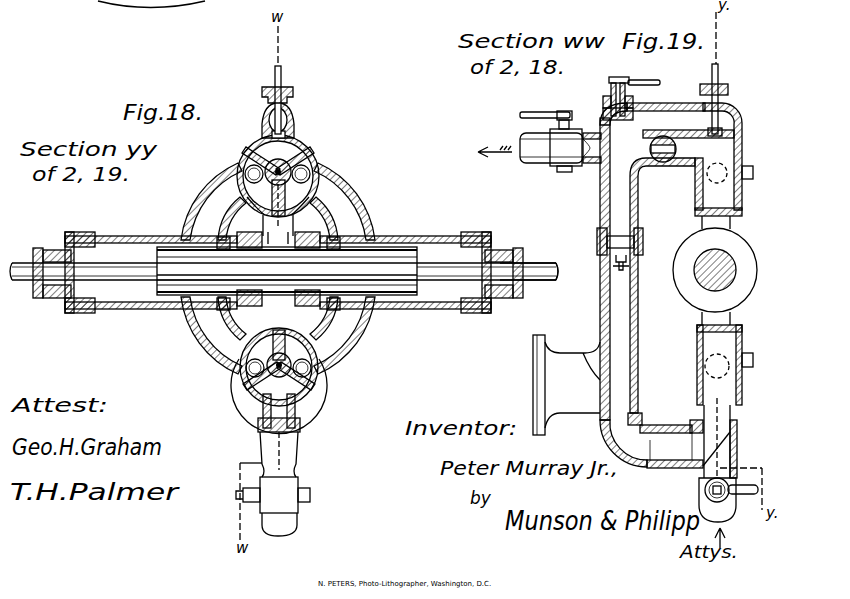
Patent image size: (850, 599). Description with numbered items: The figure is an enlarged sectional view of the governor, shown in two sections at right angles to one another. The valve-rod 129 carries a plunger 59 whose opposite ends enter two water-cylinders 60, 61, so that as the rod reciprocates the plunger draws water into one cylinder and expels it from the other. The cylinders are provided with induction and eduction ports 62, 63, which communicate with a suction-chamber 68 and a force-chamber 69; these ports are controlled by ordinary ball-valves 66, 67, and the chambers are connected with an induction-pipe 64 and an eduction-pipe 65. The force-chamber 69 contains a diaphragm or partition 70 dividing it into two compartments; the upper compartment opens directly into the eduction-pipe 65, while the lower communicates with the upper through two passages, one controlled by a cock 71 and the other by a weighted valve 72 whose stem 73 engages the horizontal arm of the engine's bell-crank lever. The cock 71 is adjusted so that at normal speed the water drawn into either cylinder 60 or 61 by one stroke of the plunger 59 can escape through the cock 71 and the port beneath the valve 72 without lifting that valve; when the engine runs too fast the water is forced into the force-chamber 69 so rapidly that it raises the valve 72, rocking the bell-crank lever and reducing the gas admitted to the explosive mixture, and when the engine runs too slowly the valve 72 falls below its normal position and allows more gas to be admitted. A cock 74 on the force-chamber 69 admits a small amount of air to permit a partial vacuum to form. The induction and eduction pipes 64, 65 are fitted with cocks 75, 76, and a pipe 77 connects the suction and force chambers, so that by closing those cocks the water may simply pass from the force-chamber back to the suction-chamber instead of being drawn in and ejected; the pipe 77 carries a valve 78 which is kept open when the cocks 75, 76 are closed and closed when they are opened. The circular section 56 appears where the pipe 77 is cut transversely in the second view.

In FIG. 19, the pipe cross-section 56 is at (701, 287).
In FIG. 18, the plunger 59 is at (287, 271).
In FIG. 18, the water-cylinder 60 is at (138, 226).
In FIG. 18, the water-cylinder 61 is at (424, 229).
In FIG. 19, the water-cylinder 61 is at (715, 270).
In FIG. 18, the induction and eduction port 62 is at (238, 345).
In FIG. 19, the induction and eduction port 62 is at (732, 314).
In FIG. 18, the induction and eduction port 63 is at (212, 208).
In FIG. 19, the induction and eduction port 63 is at (732, 224).
In FIG. 18, the induction-pipe 64 is at (279, 524).
In FIG. 19, the induction-pipe 64 is at (717, 500).
In FIG. 19, the eduction-pipe 65 is at (560, 150).
In FIG. 18, the ball-valve 66 is at (246, 370).
In FIG. 19, the ball-valve 66 is at (717, 366).
In FIG. 18, the ball-valve 67 is at (245, 171).
In FIG. 18, the suction-chamber 68 is at (279, 381).
In FIG. 19, the suction-chamber 68 is at (720, 429).
In FIG. 18, the force-chamber 69 is at (283, 143).
In FIG. 19, the force-chamber 69 is at (676, 261).
In FIG. 18, the diaphragm or partition 70 is at (264, 137).
In FIG. 19, the diaphragm or partition 70 is at (688, 127).
In FIG. 19, the cock 71 is at (663, 163).
In FIG. 18, the weighted valve 72 is at (295, 132).
In FIG. 19, the weighted valve 72 is at (741, 120).
In FIG. 18, the stem 73 is at (282, 76).
In FIG. 19, the stem 73 is at (719, 72).
In FIG. 19, the cock 74 is at (608, 90).
In FIG. 18, the cock 75 is at (273, 453).
In FIG. 19, the cock 75 is at (758, 489).
In FIG. 19, the cock 76 is at (548, 117).
In FIG. 18, the pipe 77 is at (283, 220).
In FIG. 19, the pipe 77 is at (638, 306).
In FIG. 19, the valve 78 is at (629, 266).
In FIG. 18, the valve-rod 129 is at (21, 262).
In FIG. 19, the valve-rod 129 is at (534, 261).